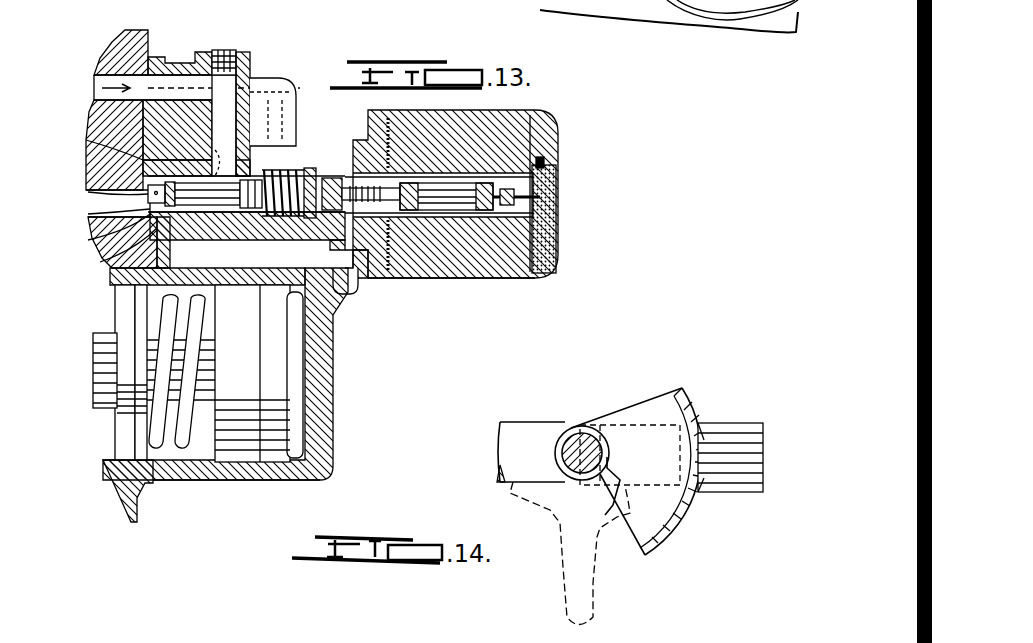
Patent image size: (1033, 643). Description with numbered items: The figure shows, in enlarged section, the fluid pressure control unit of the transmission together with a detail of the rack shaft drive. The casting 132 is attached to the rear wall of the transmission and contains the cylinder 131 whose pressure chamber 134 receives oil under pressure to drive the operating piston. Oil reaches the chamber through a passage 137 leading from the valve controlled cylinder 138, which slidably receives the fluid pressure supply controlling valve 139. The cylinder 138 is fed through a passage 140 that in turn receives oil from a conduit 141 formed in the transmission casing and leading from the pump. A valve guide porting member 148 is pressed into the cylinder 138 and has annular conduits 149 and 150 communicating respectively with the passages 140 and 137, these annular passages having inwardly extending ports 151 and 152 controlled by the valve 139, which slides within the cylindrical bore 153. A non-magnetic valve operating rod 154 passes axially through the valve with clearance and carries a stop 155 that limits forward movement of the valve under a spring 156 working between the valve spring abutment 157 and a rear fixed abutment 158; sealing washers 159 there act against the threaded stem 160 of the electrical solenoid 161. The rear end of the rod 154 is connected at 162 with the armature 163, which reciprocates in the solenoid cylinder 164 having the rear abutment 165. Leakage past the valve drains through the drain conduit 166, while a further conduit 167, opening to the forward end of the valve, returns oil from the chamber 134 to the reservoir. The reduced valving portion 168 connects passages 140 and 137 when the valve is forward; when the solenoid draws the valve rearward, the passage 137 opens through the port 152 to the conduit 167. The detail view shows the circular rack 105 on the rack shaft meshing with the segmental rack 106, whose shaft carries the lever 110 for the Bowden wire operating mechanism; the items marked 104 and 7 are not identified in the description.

In FIG. 13, the valve guide porting member 148 is at (150, 182).
In FIG. 13, the conduit 141 is at (128, 72).
In FIG. 13, the annular conduit 150 is at (158, 172).
In FIG. 13, the stop 155 is at (88, 192).
In FIG. 13, the conduit 167 is at (88, 214).
In FIG. 13, the fluid pressure supply controlling valve 139 is at (88, 240).
In FIG. 13, the valve controlled chamber or cylinder 138 is at (100, 262).
In FIG. 13, the port 152 is at (112, 272).
In FIG. 13, the casting 132 is at (185, 54).
In FIG. 13, the annular conduit 149 is at (196, 138).
In FIG. 13, the reduced valving portion 168 is at (214, 176).
In FIG. 13, the passage 140 is at (248, 72).
In FIG. 13, the drain conduit 166 is at (283, 110).
In FIG. 13, the cylindrical bore 153 is at (186, 214).
In FIG. 13, the port 151 is at (247, 212).
In FIG. 13, the valve operating rod 154 is at (300, 168).
In FIG. 13, the rear fixed abutment 158 is at (336, 178).
In FIG. 13, the spring 156 is at (286, 226).
In FIG. 13, the connection 162 is at (400, 169).
In FIG. 13, the armature 163 is at (472, 279).
In FIG. 13, the solenoid cylinder 164 is at (536, 276).
In FIG. 13, the rear abutment 165 is at (548, 162).
In FIG. 13, the electrical solenoid 161 is at (432, 280).
In FIG. 13, the threaded stem 160 is at (366, 276).
In FIG. 13, the fluid pressure sealing washers 159 is at (358, 284).
In FIG. 13, the passage 137 is at (348, 294).
In FIG. 13, the valve spring abutment 157 is at (249, 285).
In FIG. 13, the pressure chamber 134 is at (305, 422).
In FIG. 13, the circular rack or gear 105 is at (116, 408).
In FIG. 14, the circular rack or gear 105 is at (722, 425).
In FIG. 13, the base 7 is at (183, 481).
In FIG. 13, the cylinder 131 is at (262, 482).
In FIG. 14, the lever 104 is at (520, 422).
In FIG. 14, the segmental rack 106 is at (690, 395).
In FIG. 14, the lever 110 is at (583, 585).